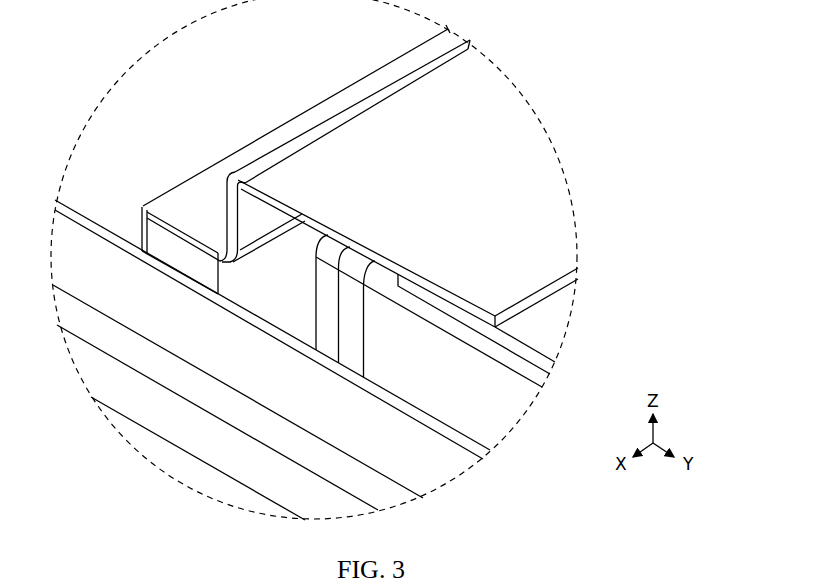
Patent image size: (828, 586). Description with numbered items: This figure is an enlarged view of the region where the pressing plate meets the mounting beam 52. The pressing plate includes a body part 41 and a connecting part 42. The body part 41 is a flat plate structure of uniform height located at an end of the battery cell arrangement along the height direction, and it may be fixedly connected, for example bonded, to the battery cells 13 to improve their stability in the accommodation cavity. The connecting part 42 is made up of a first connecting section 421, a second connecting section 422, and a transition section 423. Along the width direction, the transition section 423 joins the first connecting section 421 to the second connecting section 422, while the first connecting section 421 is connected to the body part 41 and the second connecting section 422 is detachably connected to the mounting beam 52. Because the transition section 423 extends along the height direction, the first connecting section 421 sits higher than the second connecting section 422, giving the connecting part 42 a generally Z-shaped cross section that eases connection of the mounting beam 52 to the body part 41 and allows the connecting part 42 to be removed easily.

The battery cells 13 is at (503, 423).
The body part 41 is at (560, 333).
The connecting part 42 is at (231, 106).
The first connecting section 421 is at (553, 211).
The second connecting section 422 is at (358, 90).
The transition section 423 is at (228, 203).
The mounting beam 52 is at (142, 233).